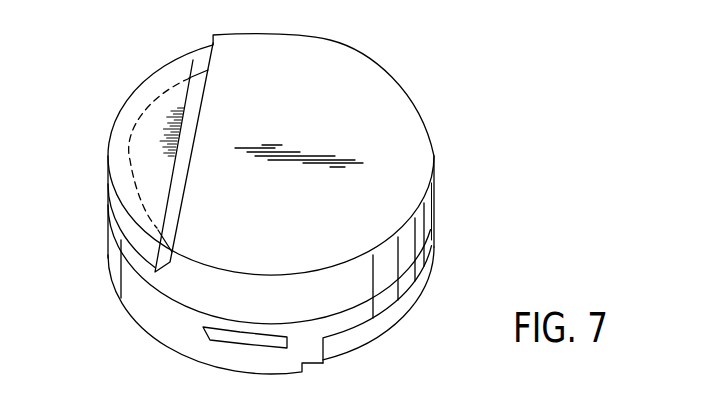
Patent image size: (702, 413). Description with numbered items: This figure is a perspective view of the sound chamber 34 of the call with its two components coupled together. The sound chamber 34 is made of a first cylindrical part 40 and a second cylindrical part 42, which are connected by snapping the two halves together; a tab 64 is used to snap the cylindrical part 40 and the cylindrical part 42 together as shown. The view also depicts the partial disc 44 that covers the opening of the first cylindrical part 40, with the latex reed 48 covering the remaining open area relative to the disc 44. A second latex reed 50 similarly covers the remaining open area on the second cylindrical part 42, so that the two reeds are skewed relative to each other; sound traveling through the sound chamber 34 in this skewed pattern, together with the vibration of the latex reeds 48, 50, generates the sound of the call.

The sound chamber 34 is at (488, 110).
The first cylindrical part 40 is at (130, 110).
The second cylindrical part 42 is at (148, 309).
The partial disc 44 is at (358, 92).
The latex reed 48 is at (152, 159).
The latex reed 50 is at (362, 335).
The tab 64 is at (233, 338).